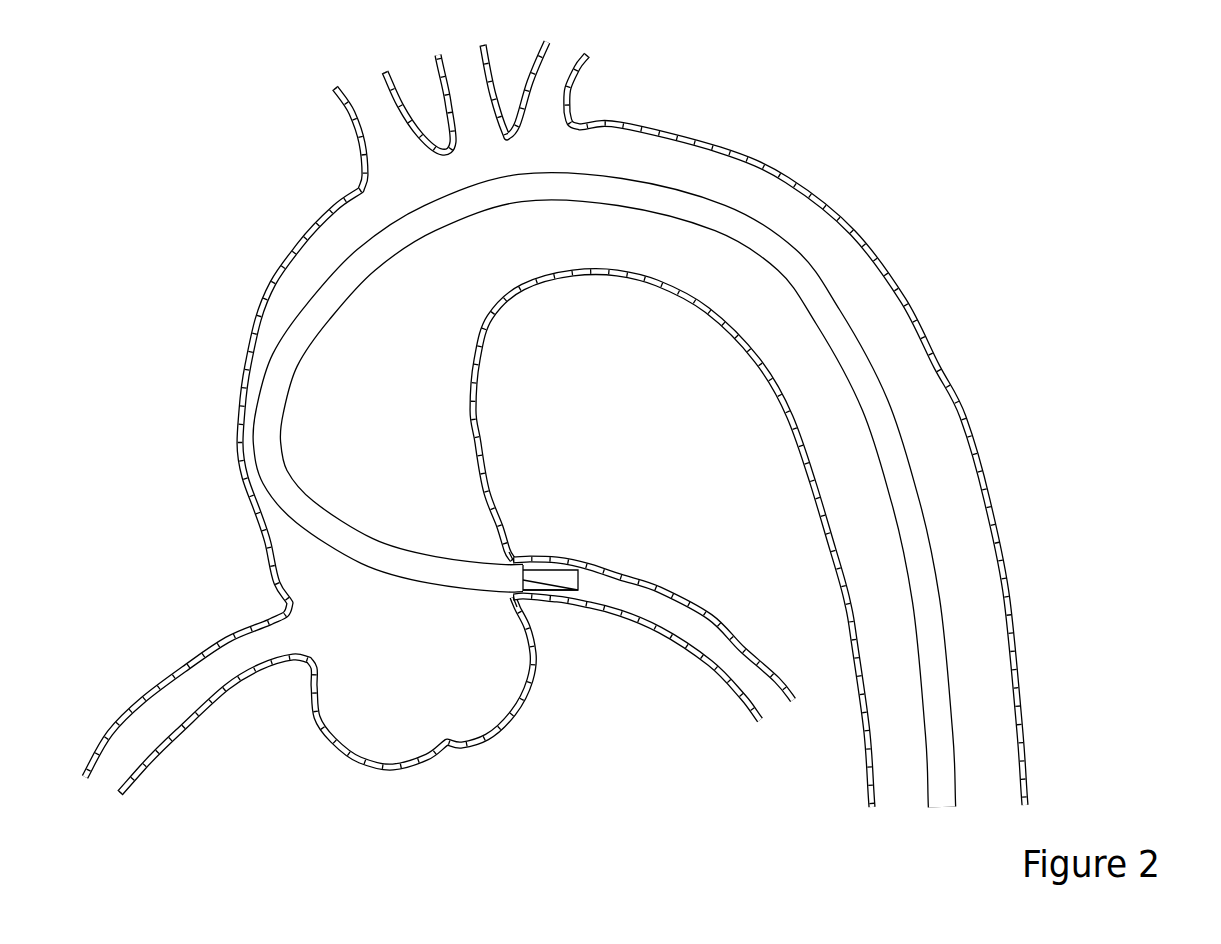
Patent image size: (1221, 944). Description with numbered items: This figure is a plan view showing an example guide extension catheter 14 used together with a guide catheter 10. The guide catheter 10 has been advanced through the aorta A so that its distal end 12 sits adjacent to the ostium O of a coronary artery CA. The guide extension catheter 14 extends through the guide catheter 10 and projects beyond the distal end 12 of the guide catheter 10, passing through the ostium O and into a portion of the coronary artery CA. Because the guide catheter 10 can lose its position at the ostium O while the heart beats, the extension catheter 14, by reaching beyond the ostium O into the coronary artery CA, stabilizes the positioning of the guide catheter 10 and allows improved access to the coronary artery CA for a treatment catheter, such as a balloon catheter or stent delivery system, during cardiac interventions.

The guide catheter 10 is at (862, 346).
The distal end 12 is at (548, 597).
The guide extension catheter 14 is at (573, 580).
The aorta A is at (763, 200).
The ostium O is at (528, 560).
The coronary artery CA is at (658, 600).